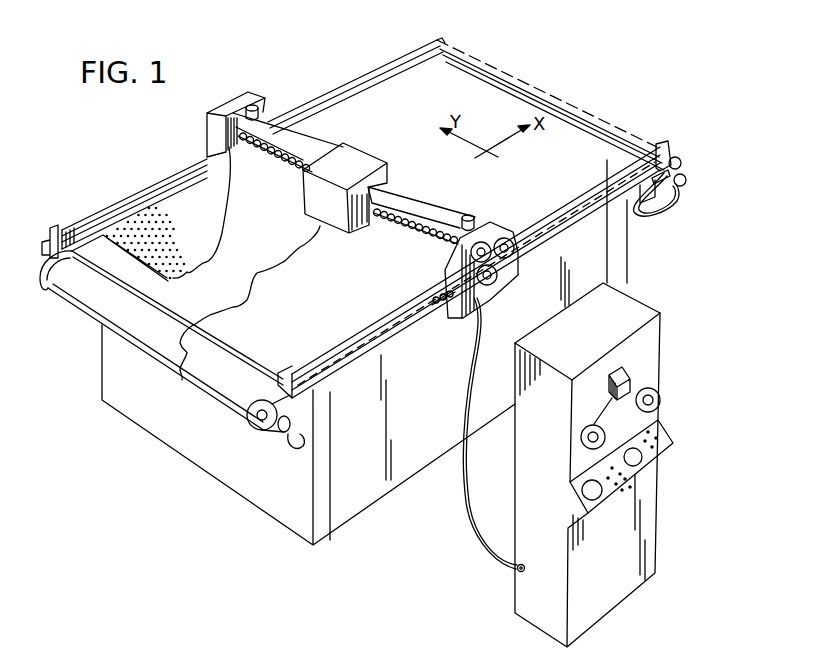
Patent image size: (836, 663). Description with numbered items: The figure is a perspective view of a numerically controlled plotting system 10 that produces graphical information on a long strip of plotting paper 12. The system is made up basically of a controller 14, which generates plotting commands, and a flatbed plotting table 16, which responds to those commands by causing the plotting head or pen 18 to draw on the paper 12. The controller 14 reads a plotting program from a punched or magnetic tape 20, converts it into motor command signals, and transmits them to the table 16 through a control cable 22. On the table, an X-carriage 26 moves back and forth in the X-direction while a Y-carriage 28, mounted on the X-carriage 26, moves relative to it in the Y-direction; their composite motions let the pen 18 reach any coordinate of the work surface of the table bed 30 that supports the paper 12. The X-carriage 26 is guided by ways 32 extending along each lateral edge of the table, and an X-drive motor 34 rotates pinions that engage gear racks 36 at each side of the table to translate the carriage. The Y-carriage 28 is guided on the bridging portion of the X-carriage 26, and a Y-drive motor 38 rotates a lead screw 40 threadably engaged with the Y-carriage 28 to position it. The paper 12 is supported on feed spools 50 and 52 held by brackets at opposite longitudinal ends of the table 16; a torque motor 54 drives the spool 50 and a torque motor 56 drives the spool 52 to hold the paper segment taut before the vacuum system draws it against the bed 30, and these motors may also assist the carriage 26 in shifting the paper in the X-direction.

The numerically controlled plotting system 10 is at (688, 131).
The plotting paper 12 is at (247, 218).
The controller 14 is at (640, 313).
The flatbed plotting table 16 is at (312, 76).
The plotting head or pen 18 is at (320, 226).
The punched or magnetic tape 20 is at (613, 402).
The control cable 22 is at (468, 521).
The X-carriage 26 is at (443, 220).
The Y-carriage 28 is at (352, 152).
The table bed 30 is at (183, 212).
The ways 32 is at (441, 15).
The X-drive motor 34 is at (518, 270).
The gear racks 36 is at (60, 233).
The Y-drive motor 38 is at (490, 268).
The lead screw 40 is at (408, 218).
The feed spool 50 is at (262, 418).
The feed spool 52 is at (668, 160).
The torque motor 54 is at (290, 441).
The torque motor 56 is at (692, 174).